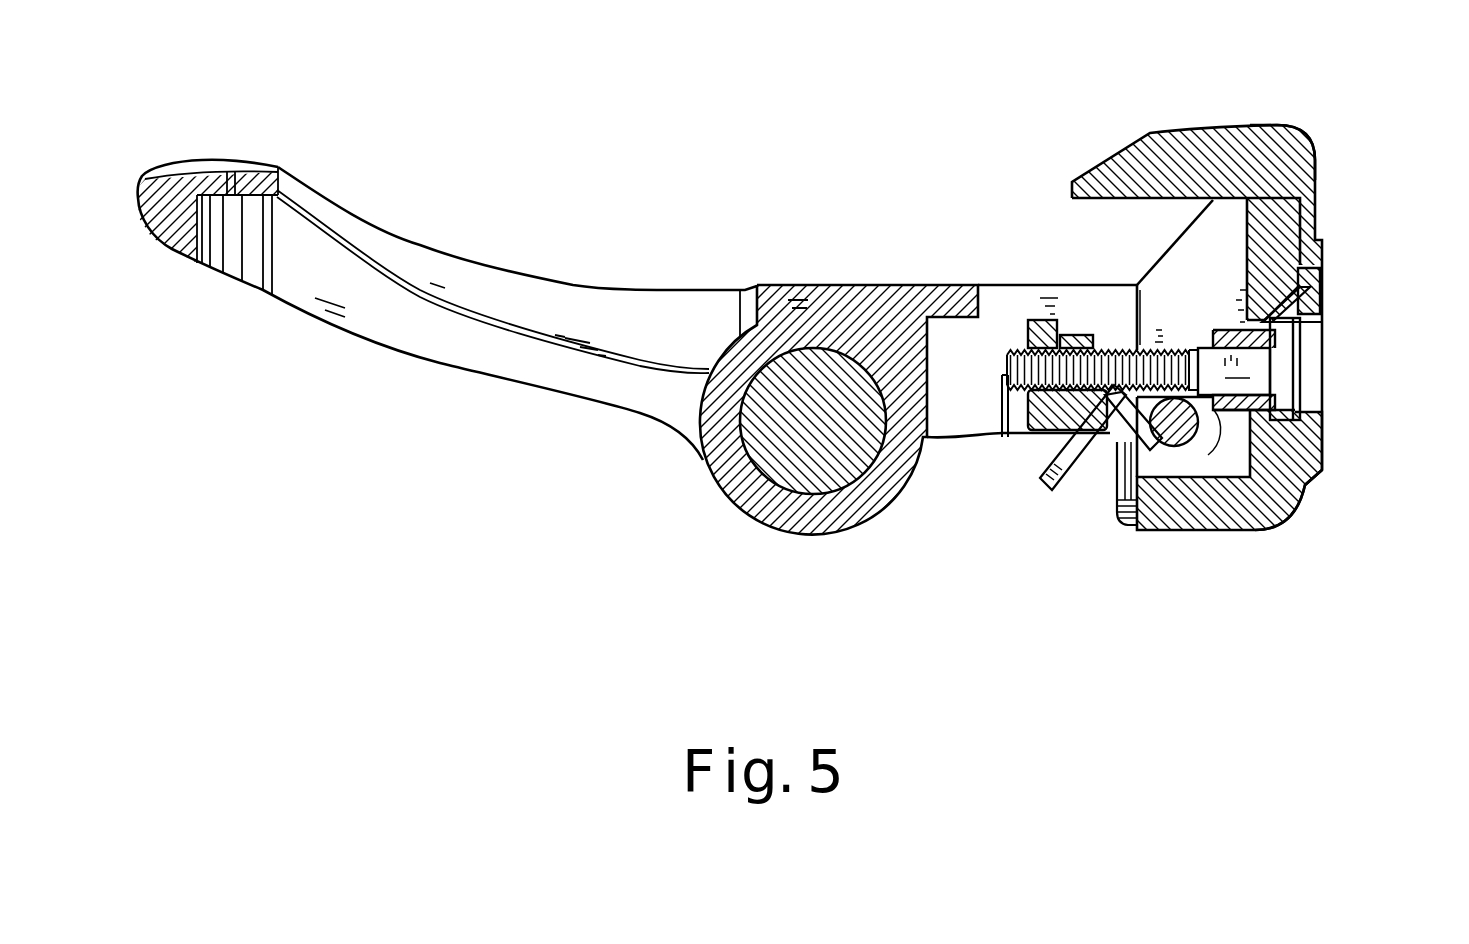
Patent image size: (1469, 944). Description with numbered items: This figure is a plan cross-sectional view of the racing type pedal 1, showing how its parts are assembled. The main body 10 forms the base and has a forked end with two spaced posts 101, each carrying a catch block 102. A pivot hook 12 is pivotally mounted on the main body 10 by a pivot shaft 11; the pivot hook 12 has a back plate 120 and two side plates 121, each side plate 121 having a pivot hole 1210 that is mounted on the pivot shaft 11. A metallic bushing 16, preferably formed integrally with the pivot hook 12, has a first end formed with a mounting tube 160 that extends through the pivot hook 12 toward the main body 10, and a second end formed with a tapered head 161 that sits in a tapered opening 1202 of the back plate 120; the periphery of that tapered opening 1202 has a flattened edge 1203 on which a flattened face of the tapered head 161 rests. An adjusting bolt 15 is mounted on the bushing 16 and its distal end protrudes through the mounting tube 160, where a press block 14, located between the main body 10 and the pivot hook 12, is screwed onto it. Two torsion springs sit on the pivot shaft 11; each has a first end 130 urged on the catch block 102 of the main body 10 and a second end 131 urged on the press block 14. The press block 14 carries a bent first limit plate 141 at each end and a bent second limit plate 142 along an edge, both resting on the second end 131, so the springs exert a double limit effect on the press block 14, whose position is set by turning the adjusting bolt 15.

The racing type pedal 1 is at (932, 130).
The main body 10 is at (806, 285).
The post 101 is at (1087, 295).
The catch block 102 is at (1060, 442).
The pivot shaft 11 is at (1172, 440).
The pivot hook 12 is at (1203, 128).
The back plate 120 is at (1316, 182).
The side plate 121 is at (1182, 272).
The tapered opening 1202 is at (1323, 322).
The flattened edge 1203 is at (1323, 303).
The pivot hole 1210 is at (1193, 442).
The first end of torsion spring 130 is at (1062, 488).
The second end of torsion spring 131 is at (1105, 432).
The press block 14 is at (1035, 438).
The first limit plate 141 is at (1090, 343).
The second limit plate 142 is at (1097, 470).
The adjusting bolt 15 is at (1307, 357).
The metallic bushing 16 is at (1322, 297).
The mounting tube 160 is at (1237, 328).
The tapered head 161 is at (1290, 482).